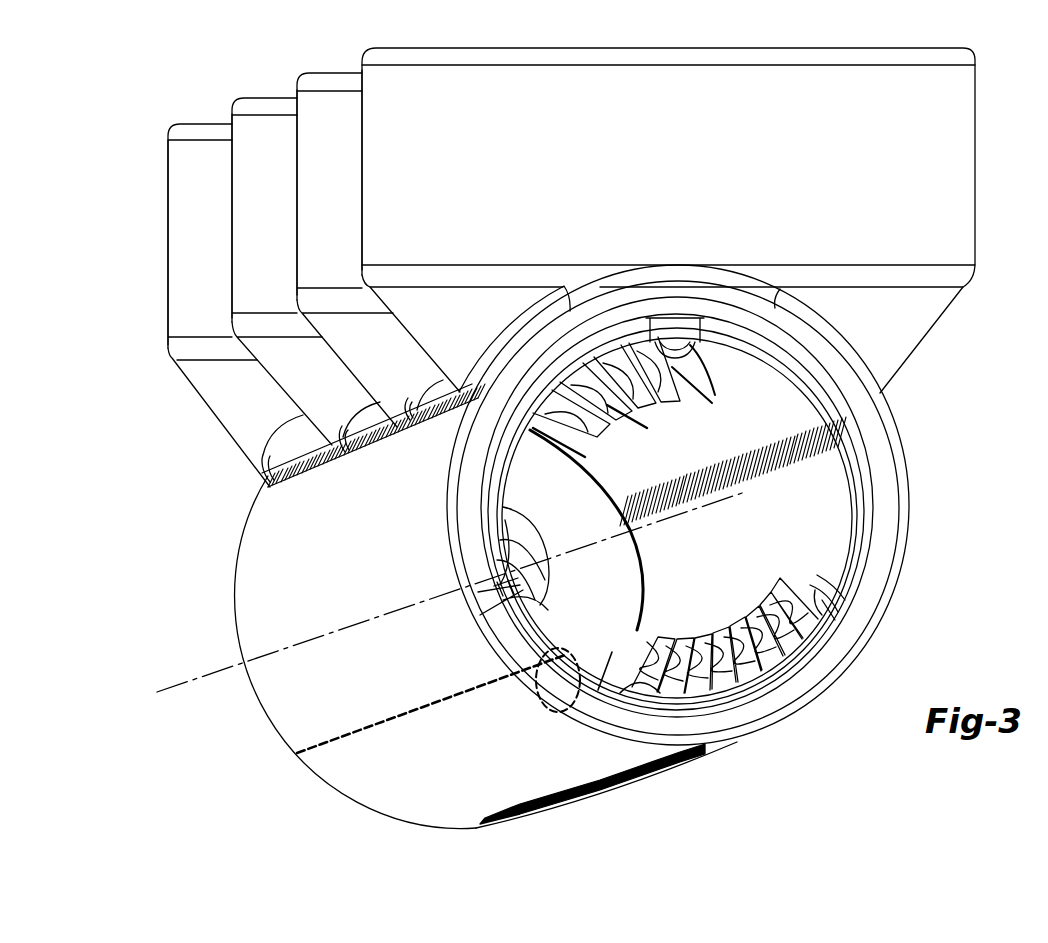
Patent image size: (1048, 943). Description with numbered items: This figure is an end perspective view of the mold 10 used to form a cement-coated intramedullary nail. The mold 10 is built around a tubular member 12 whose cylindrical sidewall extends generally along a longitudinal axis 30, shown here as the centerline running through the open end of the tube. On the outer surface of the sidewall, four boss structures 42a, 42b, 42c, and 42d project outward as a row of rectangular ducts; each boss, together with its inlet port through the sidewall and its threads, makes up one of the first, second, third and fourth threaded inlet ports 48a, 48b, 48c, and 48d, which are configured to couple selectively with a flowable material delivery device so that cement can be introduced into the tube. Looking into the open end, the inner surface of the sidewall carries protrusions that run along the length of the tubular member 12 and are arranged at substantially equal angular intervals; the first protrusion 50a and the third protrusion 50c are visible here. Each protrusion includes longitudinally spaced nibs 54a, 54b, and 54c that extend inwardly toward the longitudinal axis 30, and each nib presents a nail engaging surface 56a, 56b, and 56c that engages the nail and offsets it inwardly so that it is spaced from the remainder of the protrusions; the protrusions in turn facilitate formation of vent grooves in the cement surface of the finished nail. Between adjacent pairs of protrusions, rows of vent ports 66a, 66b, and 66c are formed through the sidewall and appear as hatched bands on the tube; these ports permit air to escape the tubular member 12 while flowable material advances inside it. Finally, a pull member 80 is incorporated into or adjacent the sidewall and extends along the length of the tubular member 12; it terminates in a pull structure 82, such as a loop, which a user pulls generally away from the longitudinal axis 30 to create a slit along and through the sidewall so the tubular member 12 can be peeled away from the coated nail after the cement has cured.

The mold 10 is at (192, 572).
The tubular member 12 is at (252, 636).
The longitudinal axis 30 is at (207, 675).
The boss structure 42a is at (312, 233).
The boss structure 42b is at (372, 217).
The boss structure 42c is at (250, 265).
The boss structure 42d is at (190, 280).
The first threaded inlet port 48a is at (383, 108).
The second threaded inlet port 48b is at (320, 132).
The third threaded inlet port 48c is at (255, 155).
The fourth threaded inlet port 48d is at (190, 180).
The first protrusion 50a is at (690, 355).
The third protrusion 50c is at (830, 588).
The nib 54a is at (543, 580).
The nib 54b is at (648, 390).
The nib 54c is at (783, 587).
The nail engaging surface 56a is at (560, 582).
The nail engaging surface 56b is at (647, 400).
The nail engaging surface 56c is at (780, 587).
The first plurality of vent ports 66a is at (352, 460).
The second plurality of vent ports 66b is at (762, 470).
The third plurality of vent ports 66c is at (607, 795).
The pull member 80 is at (400, 715).
The pull structure 82 is at (562, 702).